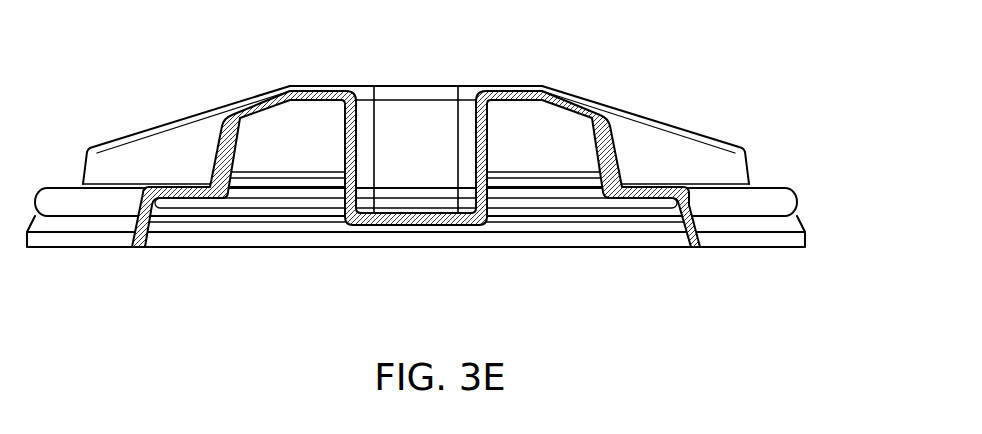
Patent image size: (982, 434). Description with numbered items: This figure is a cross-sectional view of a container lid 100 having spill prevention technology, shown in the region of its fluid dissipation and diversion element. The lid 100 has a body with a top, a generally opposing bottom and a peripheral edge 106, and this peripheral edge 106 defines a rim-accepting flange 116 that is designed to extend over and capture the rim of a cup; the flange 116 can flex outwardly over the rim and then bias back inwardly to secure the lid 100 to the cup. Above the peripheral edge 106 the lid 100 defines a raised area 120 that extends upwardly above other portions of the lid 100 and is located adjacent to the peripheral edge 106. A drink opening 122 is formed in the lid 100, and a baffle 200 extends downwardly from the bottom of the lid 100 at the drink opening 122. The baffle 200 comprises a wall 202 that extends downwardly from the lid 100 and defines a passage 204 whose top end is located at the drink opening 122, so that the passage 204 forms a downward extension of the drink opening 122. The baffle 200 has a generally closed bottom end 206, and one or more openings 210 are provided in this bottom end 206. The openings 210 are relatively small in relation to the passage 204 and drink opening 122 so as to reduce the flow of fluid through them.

The lid 100 is at (748, 36).
The peripheral edge 106 is at (811, 245).
The rim-accepting flange 116 is at (797, 193).
The raised area 120 is at (328, 86).
The drink opening 122 is at (389, 79).
The baffle 200 is at (310, 144).
The wall 202 is at (495, 152).
The passage 204 is at (430, 134).
The bottom end 206 is at (490, 224).
The openings 210 is at (380, 228).